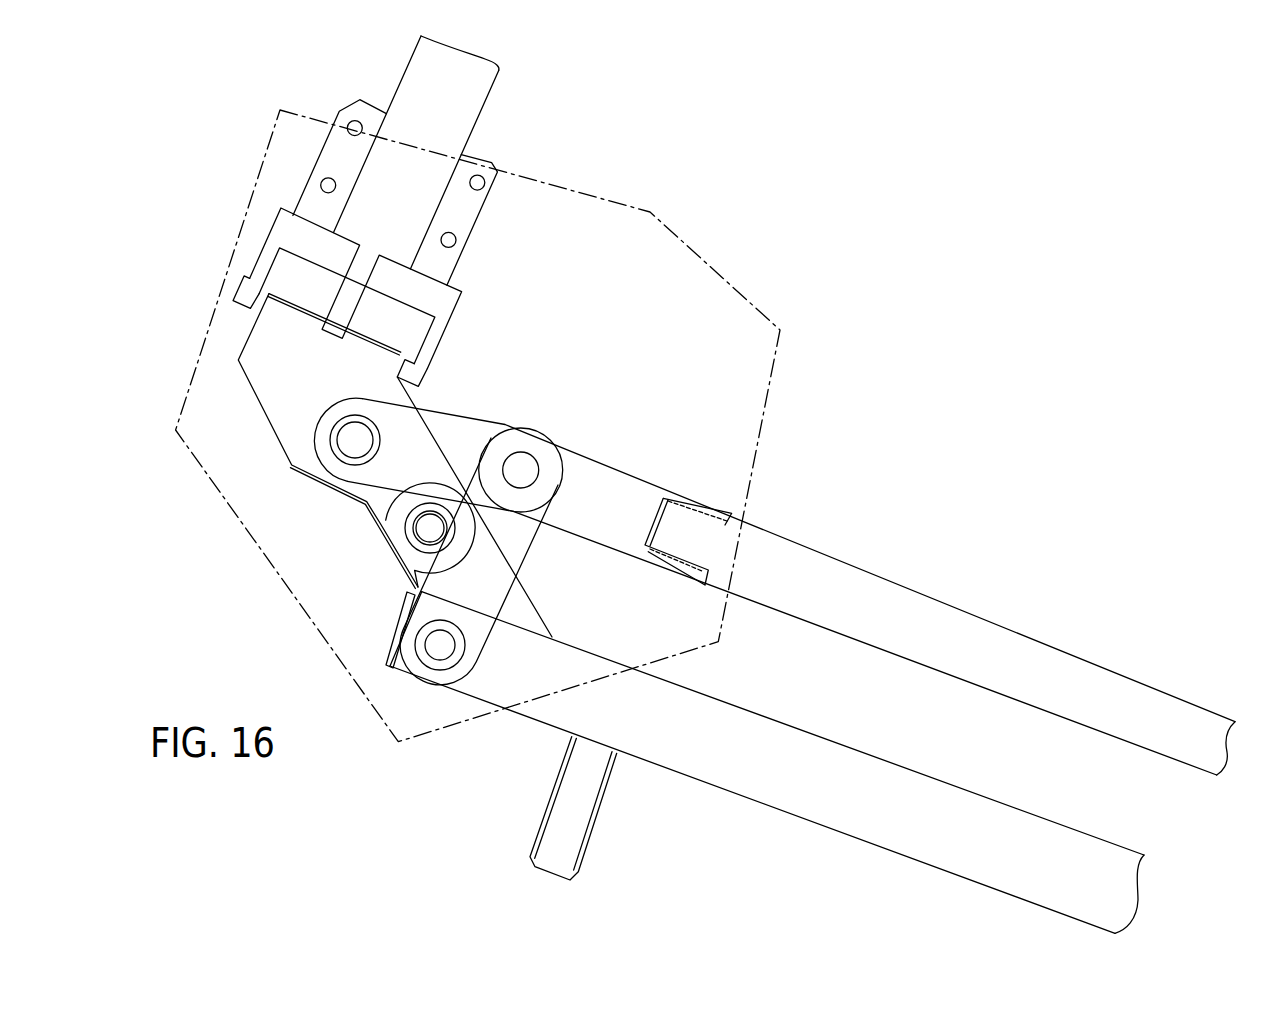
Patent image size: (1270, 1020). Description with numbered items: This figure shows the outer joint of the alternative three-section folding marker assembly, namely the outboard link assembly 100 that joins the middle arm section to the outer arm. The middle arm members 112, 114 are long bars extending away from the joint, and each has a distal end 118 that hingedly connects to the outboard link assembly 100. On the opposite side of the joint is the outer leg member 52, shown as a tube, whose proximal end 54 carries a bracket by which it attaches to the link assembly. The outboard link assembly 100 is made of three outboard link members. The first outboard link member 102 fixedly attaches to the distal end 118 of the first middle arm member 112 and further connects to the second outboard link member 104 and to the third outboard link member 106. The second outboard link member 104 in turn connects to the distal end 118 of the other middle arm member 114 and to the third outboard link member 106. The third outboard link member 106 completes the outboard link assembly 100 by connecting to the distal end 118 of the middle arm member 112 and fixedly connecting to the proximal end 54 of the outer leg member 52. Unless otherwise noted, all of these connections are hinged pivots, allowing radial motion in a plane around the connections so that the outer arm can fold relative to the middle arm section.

The outer leg member 52 is at (492, 87).
The proximal end of the outer leg member 54 is at (317, 162).
The outboard link assembly 100 is at (757, 311).
The first outboard link member 102 is at (540, 540).
The second outboard link member 104 is at (492, 418).
The third outboard link member 106 is at (258, 398).
The middle arm member 112 is at (755, 803).
The middle arm member 114 is at (873, 645).
The distal end of the middle arm members 118 is at (623, 557).